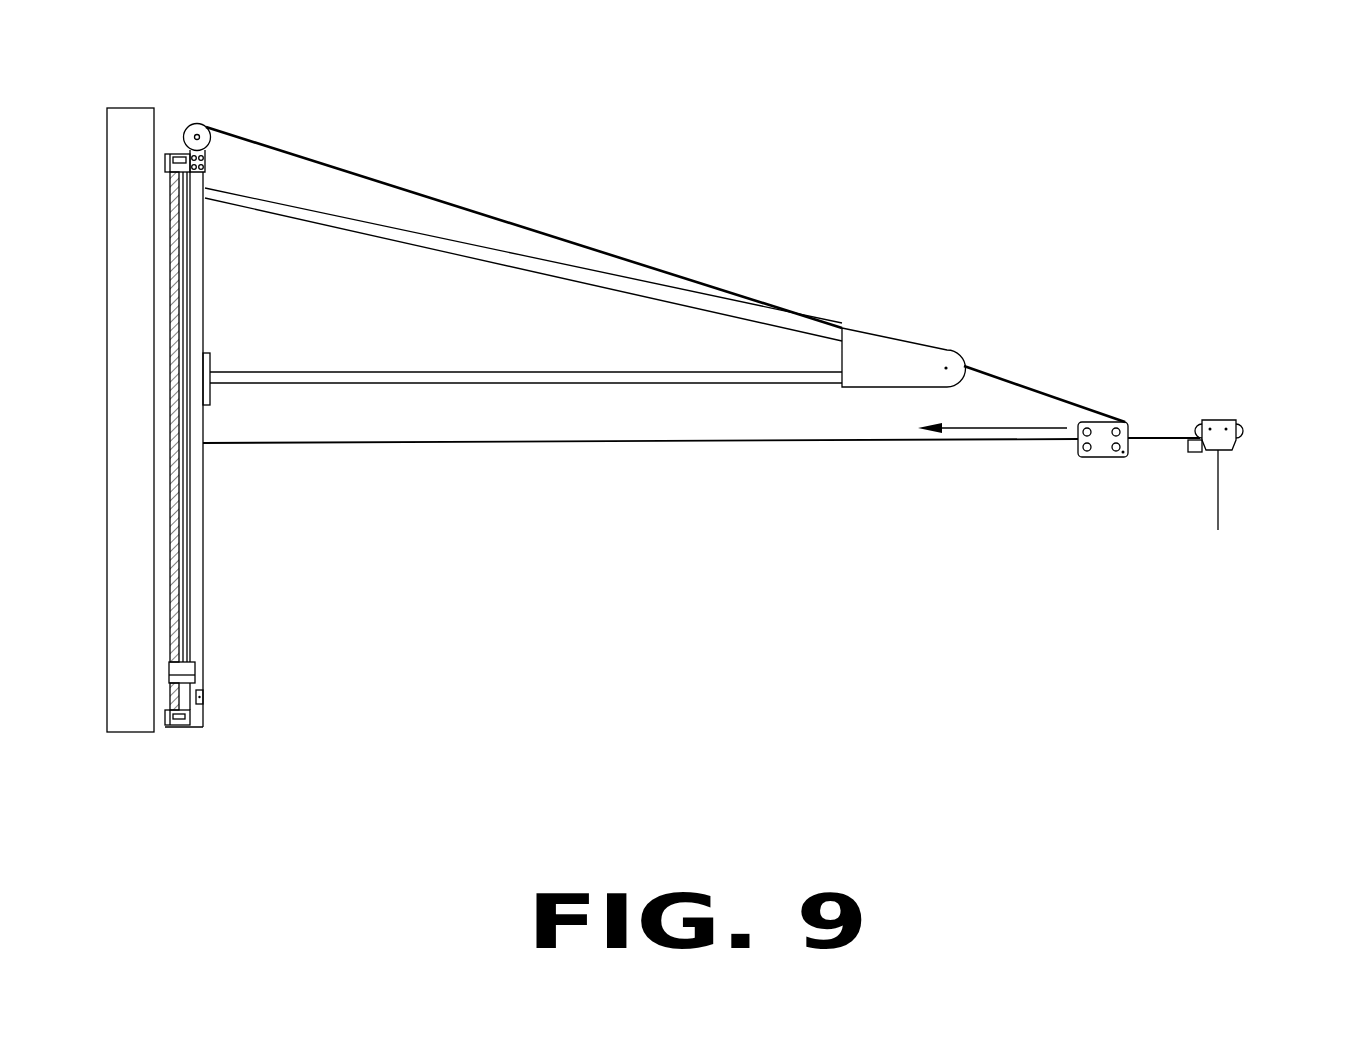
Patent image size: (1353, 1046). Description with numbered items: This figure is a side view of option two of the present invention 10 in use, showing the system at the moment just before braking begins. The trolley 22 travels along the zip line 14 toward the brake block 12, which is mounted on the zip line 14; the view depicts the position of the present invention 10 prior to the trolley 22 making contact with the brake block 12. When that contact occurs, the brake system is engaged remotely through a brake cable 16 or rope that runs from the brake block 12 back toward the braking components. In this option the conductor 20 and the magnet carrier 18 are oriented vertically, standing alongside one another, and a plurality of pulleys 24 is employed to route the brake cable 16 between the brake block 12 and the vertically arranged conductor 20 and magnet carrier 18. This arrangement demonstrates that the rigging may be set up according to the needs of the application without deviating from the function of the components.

The present invention 10 is at (1020, 173).
The brake block 12 is at (1077, 450).
The zip line 14 is at (715, 441).
The brake cable 16 is at (1060, 393).
The magnet carrier 18 is at (180, 675).
The conductor 20 is at (172, 562).
The trolley 22 is at (1237, 423).
The pulleys 24 is at (205, 125).